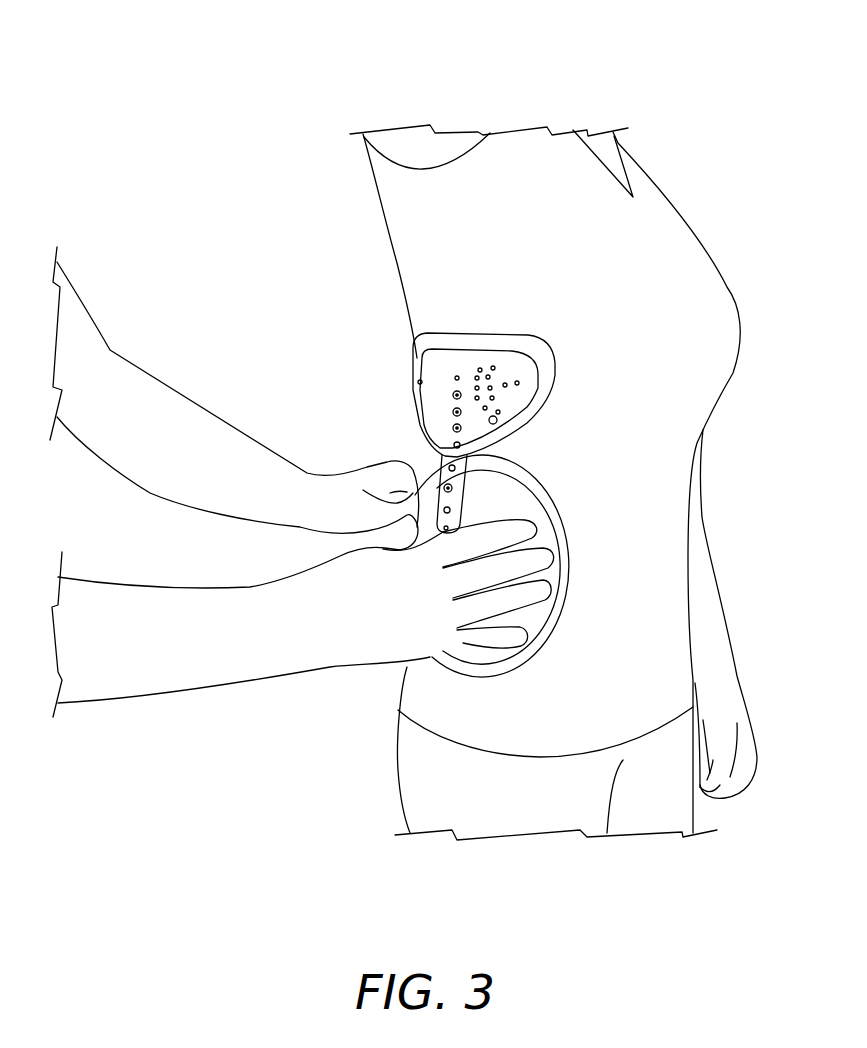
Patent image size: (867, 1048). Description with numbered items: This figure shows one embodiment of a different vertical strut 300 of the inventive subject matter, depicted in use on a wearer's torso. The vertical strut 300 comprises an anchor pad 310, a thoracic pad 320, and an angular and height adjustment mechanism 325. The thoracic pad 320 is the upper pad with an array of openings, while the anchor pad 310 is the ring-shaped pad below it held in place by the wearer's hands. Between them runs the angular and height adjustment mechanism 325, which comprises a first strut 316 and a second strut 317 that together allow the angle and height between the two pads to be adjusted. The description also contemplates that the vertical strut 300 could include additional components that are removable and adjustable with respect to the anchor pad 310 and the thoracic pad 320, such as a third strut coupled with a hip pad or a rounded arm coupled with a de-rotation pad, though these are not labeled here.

The vertical strut 300 is at (530, 353).
The anchor pad 310 is at (537, 512).
The first strut 316 is at (463, 483).
The second strut 317 is at (463, 510).
The thoracic pad 320 is at (448, 333).
The angular and height adjustment mechanism 325 is at (428, 494).